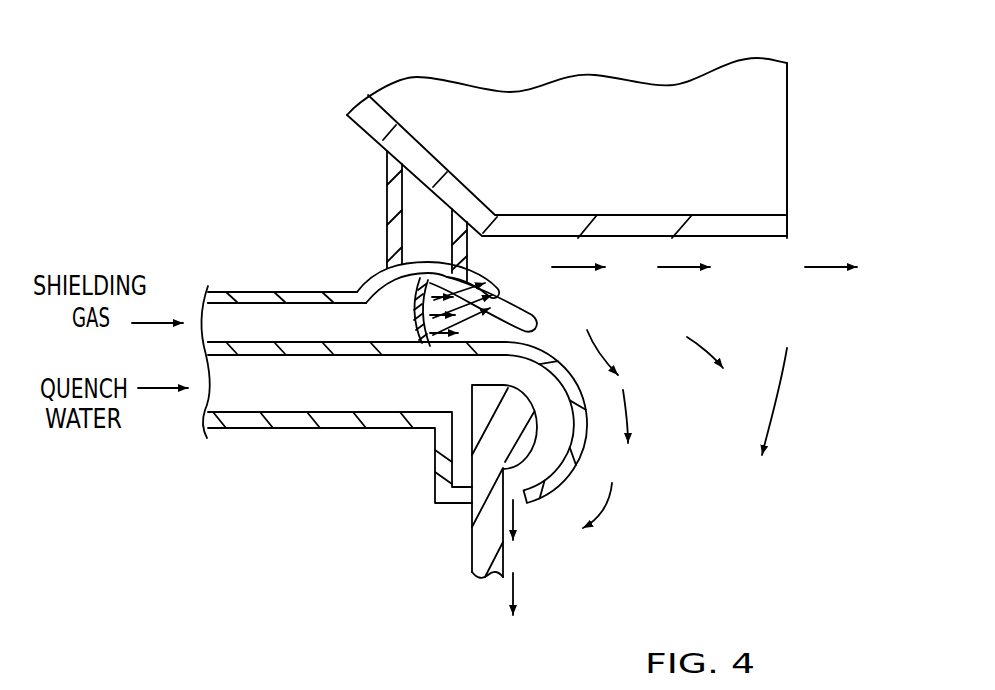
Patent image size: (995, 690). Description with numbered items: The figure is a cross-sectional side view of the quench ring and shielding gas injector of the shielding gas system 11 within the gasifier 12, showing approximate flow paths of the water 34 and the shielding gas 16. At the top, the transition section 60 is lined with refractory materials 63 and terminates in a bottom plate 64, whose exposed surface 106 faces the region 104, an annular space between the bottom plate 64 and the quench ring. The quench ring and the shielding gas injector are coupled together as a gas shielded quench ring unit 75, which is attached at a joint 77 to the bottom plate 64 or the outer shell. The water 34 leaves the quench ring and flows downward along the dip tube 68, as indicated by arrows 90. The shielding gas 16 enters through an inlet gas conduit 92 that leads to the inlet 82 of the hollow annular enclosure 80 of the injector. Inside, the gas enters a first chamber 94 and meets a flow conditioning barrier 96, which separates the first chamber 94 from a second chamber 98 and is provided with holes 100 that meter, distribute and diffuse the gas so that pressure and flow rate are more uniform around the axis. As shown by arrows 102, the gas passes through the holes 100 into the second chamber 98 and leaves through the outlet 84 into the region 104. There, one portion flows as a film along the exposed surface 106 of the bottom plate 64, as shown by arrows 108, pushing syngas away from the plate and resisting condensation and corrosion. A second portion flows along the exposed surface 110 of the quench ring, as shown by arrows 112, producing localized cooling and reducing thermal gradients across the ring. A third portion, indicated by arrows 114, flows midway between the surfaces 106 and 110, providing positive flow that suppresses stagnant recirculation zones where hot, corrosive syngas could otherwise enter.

The shielding gas system 11 is at (143, 497).
The gasifier 12 is at (313, 83).
The shielding gas 16 is at (152, 322).
The water 34 is at (157, 390).
The transition section 60 is at (596, 122).
The refractory materials 63 is at (694, 162).
The bottom plate 64 is at (787, 170).
The dip tube 68 is at (470, 537).
The gas shielded quench ring unit 75 is at (378, 537).
The joint 77 is at (387, 193).
The hollow annular enclosure 80 is at (333, 462).
The inlet 82 is at (363, 302).
The outlet 84 is at (540, 332).
The arrows 90 is at (515, 588).
The inlet gas conduit 92 is at (253, 292).
The first chamber 94 is at (275, 338).
The flow conditioning barrier 96 is at (430, 358).
The second chamber 98 is at (477, 337).
The holes 100 is at (416, 338).
The arrows 102 is at (492, 292).
The region 104 is at (726, 315).
The exposed surface 106 is at (563, 238).
The arrows 108 is at (678, 267).
The exposed surface 110 is at (583, 437).
The arrows 112 is at (605, 341).
The arrows 114 is at (705, 342).